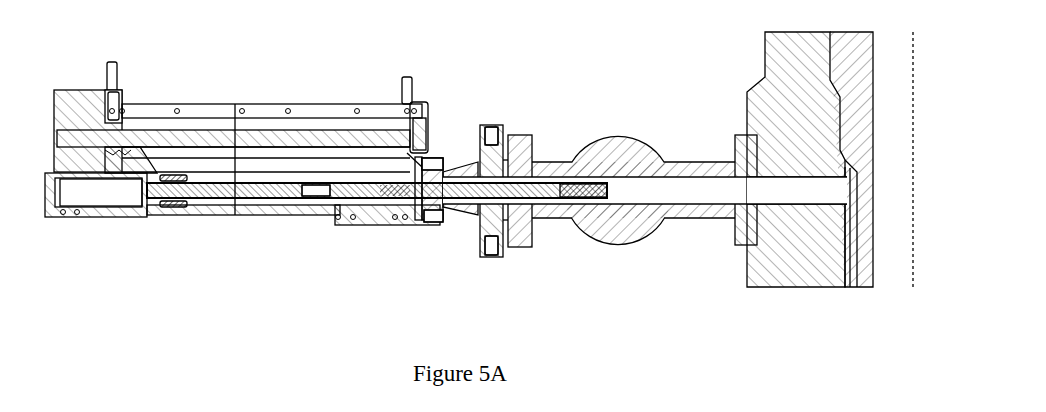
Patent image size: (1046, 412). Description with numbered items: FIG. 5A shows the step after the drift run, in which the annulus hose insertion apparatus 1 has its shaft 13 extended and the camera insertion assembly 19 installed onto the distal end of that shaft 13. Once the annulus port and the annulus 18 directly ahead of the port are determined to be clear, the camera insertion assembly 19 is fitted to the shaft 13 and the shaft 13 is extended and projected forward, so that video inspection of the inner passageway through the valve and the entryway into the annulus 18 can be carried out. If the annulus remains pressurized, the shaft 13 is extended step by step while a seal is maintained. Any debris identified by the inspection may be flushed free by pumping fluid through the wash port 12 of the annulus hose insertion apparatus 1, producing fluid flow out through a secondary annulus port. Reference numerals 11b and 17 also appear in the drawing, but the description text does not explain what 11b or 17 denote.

The annulus hose insertion apparatus 1 is at (247, 88).
The wash port 12 is at (490, 127).
The ball joint 11b is at (617, 143).
The shaft 13 is at (267, 200).
The camera insertion assembly 19 is at (592, 199).
The annulus 18 is at (850, 265).
The reference line 17 is at (905, 75).